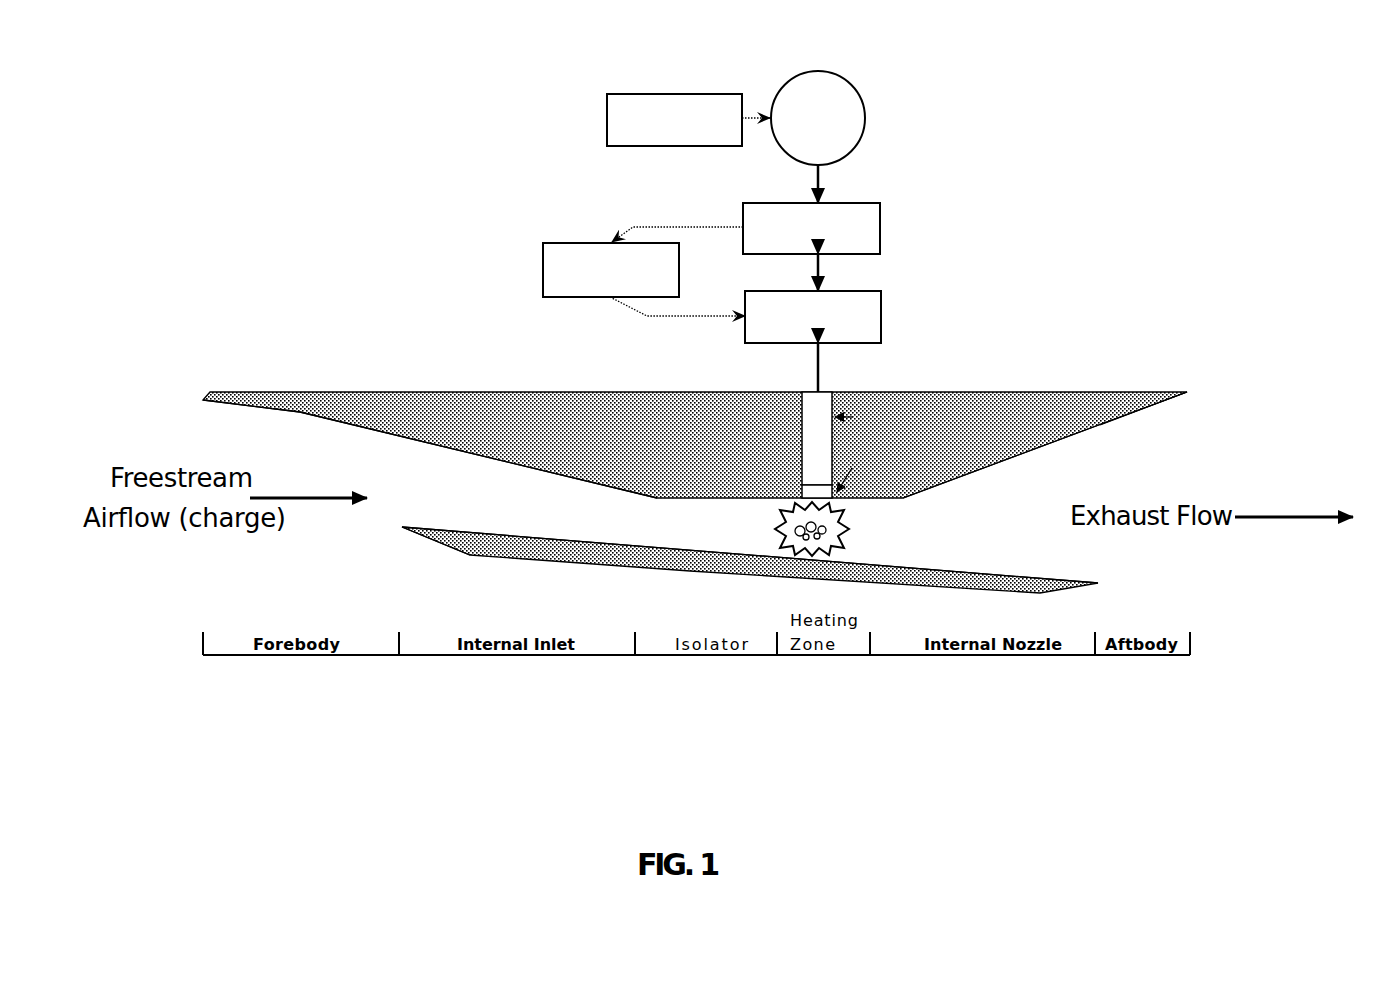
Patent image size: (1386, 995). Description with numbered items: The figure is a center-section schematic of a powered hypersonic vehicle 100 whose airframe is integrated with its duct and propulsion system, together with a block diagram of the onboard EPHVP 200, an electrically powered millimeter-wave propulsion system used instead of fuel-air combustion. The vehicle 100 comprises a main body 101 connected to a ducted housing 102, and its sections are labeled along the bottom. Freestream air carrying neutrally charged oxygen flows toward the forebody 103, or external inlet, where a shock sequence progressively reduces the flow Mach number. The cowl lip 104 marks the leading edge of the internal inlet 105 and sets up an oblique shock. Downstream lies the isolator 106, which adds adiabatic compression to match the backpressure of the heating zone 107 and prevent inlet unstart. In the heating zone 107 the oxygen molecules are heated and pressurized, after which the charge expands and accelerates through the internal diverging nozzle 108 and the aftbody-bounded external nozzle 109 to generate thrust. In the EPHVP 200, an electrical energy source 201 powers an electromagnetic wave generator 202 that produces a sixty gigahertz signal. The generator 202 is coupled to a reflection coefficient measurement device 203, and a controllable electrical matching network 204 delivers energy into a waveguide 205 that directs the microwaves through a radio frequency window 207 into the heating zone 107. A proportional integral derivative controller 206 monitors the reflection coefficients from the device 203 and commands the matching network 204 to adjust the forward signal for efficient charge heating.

The hypersonic vehicle 100 is at (345, 222).
The main body 101 is at (337, 390).
The ducted housing 102 is at (558, 560).
The forebody 103 is at (303, 415).
The cowl lip 104 is at (402, 527).
The internal inlet 105 is at (525, 510).
The isolator 106 is at (707, 532).
The heating zone 107 is at (837, 533).
The internal diverging nozzle 108 is at (1003, 555).
The aftbody-bounded external nozzle 109 is at (1158, 472).
The EPHVP 200 is at (900, 95).
The electrical energy source 201 is at (607, 117).
The electromagnetic wave generator 202 is at (833, 73).
The reflection coefficient measurement device 203 is at (878, 203).
The controllable electrical matching network 204 is at (878, 290).
The waveguide 205 is at (802, 412).
The proportional integral derivative controller 206 is at (543, 250).
The radio frequency window 207 is at (802, 488).